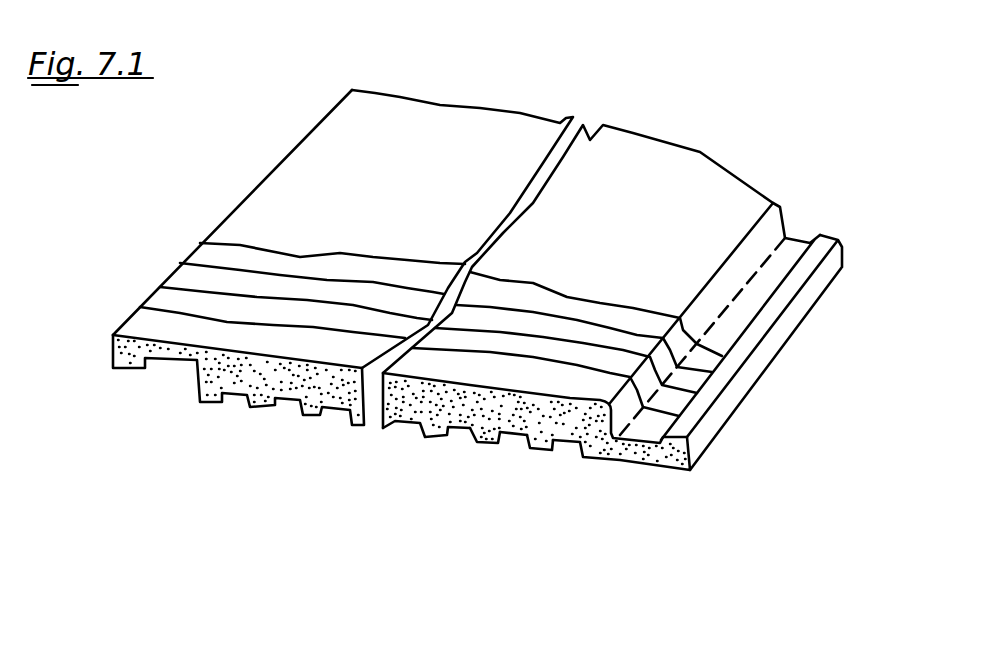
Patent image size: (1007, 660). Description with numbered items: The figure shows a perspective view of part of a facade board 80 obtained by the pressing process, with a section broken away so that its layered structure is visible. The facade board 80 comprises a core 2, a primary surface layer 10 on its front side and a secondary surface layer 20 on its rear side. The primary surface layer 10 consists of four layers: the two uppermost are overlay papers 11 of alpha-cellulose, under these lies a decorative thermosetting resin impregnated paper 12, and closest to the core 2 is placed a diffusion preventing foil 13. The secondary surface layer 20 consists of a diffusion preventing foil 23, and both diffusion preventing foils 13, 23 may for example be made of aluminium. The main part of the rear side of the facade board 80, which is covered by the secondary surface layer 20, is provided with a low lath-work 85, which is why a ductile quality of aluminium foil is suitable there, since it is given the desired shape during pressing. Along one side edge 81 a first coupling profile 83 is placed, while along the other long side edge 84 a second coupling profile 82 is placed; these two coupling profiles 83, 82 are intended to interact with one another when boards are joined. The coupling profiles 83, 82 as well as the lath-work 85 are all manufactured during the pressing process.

The facade board 80 is at (702, 112).
The side edge 81 is at (230, 212).
The second coupling profile 82 is at (747, 393).
The first coupling profile 83 is at (152, 382).
The long side edge 84 is at (643, 435).
The lath-work 85 is at (482, 443).
The core 2 is at (232, 338).
The primary surface layer 10 is at (363, 558).
The overlay papers 11 is at (402, 245).
The intermediate layer 12 is at (342, 295).
The diffusion preventing foil 13 is at (297, 316).
The secondary surface layer 20 is at (538, 590).
The diffusion preventing foil 23 is at (533, 458).